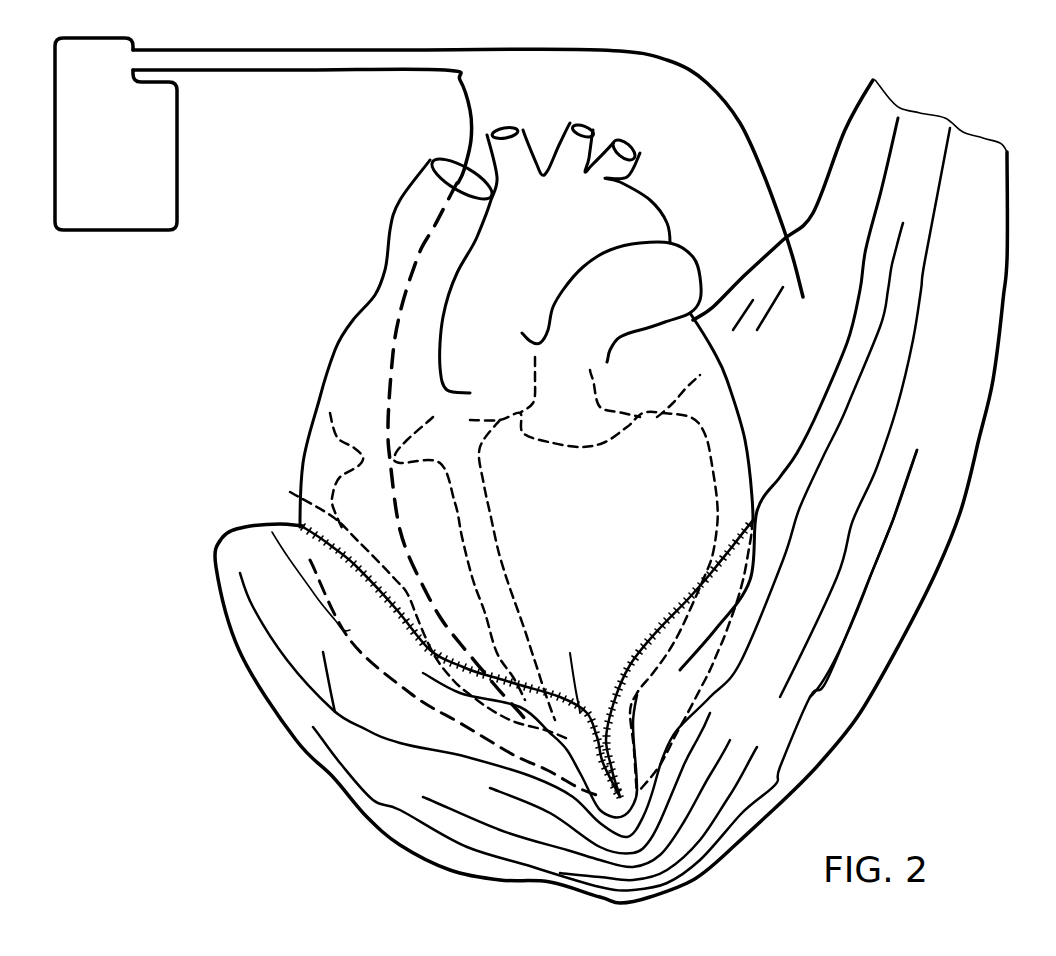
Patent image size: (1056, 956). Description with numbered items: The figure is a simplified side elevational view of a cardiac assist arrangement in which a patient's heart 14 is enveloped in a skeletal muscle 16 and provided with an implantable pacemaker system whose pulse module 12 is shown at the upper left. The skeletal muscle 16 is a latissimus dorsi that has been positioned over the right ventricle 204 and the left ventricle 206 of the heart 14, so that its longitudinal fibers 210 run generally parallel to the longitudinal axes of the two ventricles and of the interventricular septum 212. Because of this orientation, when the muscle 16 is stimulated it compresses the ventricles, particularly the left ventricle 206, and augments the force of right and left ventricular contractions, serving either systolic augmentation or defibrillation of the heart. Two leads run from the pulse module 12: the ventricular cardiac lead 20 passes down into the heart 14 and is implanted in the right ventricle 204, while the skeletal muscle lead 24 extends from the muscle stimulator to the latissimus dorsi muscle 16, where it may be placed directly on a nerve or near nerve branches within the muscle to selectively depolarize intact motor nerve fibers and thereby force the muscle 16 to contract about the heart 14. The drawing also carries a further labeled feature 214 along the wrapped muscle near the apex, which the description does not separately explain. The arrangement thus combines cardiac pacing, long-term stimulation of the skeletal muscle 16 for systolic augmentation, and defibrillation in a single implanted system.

The pulse module 12 is at (121, 210).
The heart 14 is at (337, 372).
The skeletal muscle 16 is at (911, 581).
The ventricular cardiac lead 20 is at (323, 70).
The skeletal muscle lead 24 is at (377, 48).
The right ventricle 204 is at (290, 552).
The left ventricle 206 is at (742, 450).
The longitudinal fibers 210 is at (809, 700).
The interventricular septum 212 is at (486, 536).
The suture line 214 is at (663, 618).